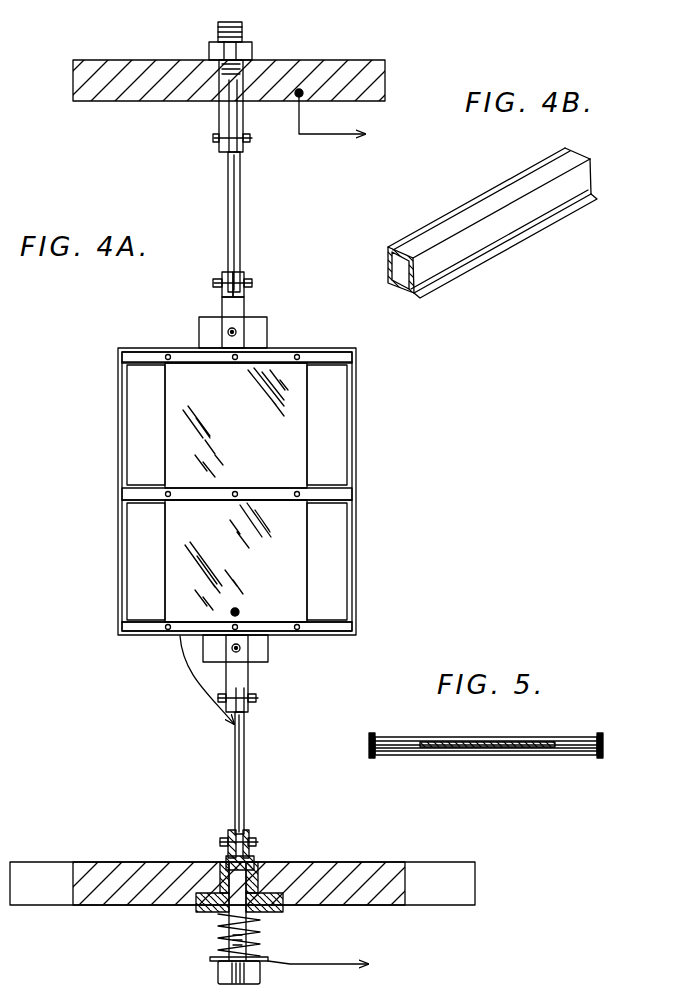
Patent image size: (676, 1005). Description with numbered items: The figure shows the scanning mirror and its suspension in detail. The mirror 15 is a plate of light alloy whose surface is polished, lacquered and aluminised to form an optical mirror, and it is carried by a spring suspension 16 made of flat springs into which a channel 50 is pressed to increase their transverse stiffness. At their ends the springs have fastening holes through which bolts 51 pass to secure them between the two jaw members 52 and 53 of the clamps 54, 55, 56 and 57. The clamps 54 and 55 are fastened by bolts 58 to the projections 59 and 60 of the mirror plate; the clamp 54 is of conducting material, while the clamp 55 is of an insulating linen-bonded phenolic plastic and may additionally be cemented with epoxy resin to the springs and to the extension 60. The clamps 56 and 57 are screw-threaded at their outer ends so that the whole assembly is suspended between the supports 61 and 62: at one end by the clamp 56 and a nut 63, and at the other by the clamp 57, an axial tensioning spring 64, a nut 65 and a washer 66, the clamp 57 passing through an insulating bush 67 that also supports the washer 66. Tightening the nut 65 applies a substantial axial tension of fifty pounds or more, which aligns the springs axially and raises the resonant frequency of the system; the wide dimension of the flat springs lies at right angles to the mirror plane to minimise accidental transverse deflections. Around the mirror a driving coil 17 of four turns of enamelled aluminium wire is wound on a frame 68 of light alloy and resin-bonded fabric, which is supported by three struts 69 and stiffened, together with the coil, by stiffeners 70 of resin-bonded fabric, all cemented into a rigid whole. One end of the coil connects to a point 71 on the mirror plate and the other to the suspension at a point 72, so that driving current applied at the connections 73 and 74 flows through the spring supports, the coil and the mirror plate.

In FIG. 4A, the mirror 15 is at (178, 476).
In FIG. 5, the mirror 15 is at (541, 744).
In FIG. 4A, the spring suspension 16 is at (228, 206).
In FIG. 4A, the driving coil 17 is at (357, 398).
In FIG. 5, the driving coil 17 is at (601, 757).
In FIG. 4A, the channel 50 is at (241, 227).
In FIG. 4A, the bolts 51 is at (251, 139).
In FIG. 4A, the jaw member 52 is at (222, 274).
In FIG. 4A, the jaw member 53 is at (241, 276).
In FIG. 4A, the clamp 54 is at (241, 311).
In FIG. 4A, the clamp 55 is at (240, 679).
In FIG. 4A, the clamp 56 is at (233, 121).
In FIG. 4A, the clamp 57 is at (256, 860).
In FIG. 4A, the bolts 58 is at (237, 333).
In FIG. 4A, the projection 59 is at (262, 338).
In FIG. 4A, the projection 60 is at (268, 660).
In FIG. 4A, the support 61 is at (306, 72).
In FIG. 4A, the support 62 is at (159, 893).
In FIG. 4A, the nut 63 is at (252, 48).
In FIG. 4A, the axial tensioning spring 64 is at (262, 950).
In FIG. 4A, the nut 65 is at (258, 981).
In FIG. 4A, the washer 66 is at (212, 959).
In FIG. 4A, the insulating bush 67 is at (282, 908).
In FIG. 4A, the frame 68 is at (355, 384).
In FIG. 5, the frame 68 is at (374, 738).
In FIG. 4A, the struts 69 is at (318, 350).
In FIG. 4B, the struts 69 is at (498, 185).
In FIG. 5, the struts 69 is at (540, 749).
In FIG. 4B, the stiffeners 70 is at (571, 181).
In FIG. 4A, the point 71 is at (231, 612).
In FIG. 4A, the point 72 is at (231, 727).
In FIG. 4A, the connection 73 is at (348, 131).
In FIG. 4A, the connection 74 is at (342, 964).